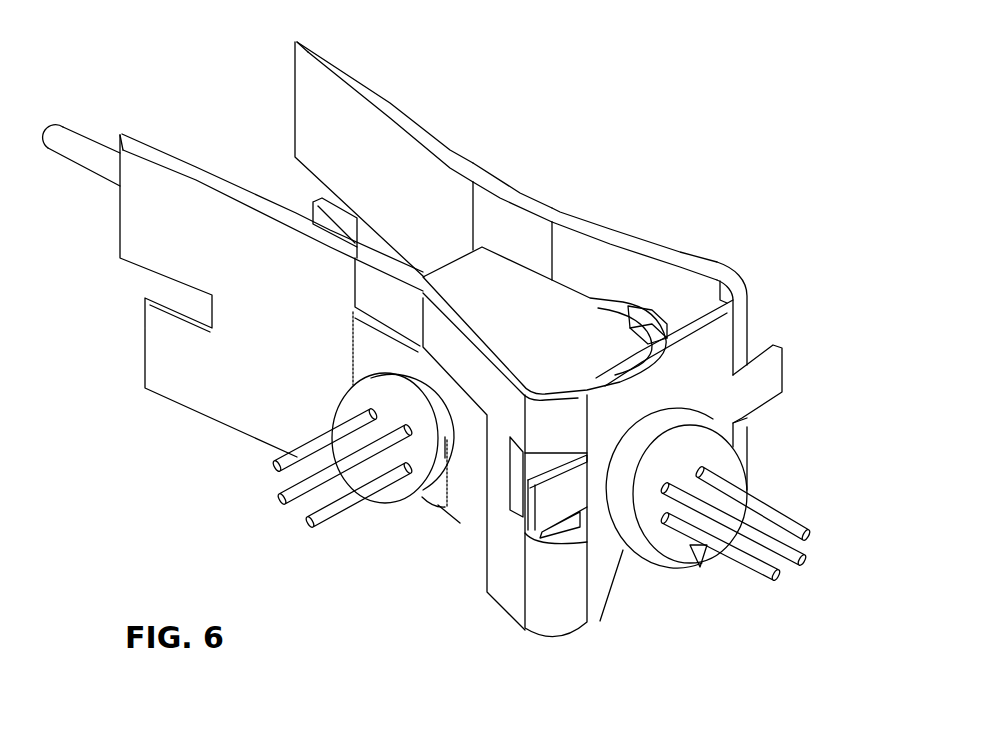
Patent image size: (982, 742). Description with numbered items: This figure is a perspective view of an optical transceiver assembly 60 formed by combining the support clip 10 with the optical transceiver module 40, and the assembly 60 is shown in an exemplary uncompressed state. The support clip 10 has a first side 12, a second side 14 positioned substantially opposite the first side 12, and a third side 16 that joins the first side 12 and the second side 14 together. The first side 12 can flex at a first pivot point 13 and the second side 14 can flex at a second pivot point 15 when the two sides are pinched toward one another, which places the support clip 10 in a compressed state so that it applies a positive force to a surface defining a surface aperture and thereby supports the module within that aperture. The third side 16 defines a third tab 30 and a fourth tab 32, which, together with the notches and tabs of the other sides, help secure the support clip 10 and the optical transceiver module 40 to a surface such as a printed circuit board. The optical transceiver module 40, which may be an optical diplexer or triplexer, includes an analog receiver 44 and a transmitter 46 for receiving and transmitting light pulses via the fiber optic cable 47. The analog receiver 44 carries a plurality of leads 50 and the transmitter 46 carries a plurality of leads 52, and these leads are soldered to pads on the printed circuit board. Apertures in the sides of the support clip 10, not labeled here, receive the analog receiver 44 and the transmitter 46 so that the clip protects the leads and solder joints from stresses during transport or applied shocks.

The support clip 10 is at (720, 268).
The first side 12 is at (282, 315).
The first pivot point 13 is at (396, 303).
The second side 14 is at (387, 189).
The second pivot point 15 is at (516, 245).
The third side 16 is at (666, 394).
The third tab 30 is at (572, 505).
The fourth tab 32 is at (765, 405).
The optical transceiver module 40 is at (532, 317).
The analog receiver 44 is at (442, 508).
The transmitter 46 is at (642, 508).
The fiber optic cable 47 is at (72, 135).
The leads 50 is at (778, 497).
The leads 52 is at (248, 490).
The optical transceiver assembly 60 is at (648, 132).